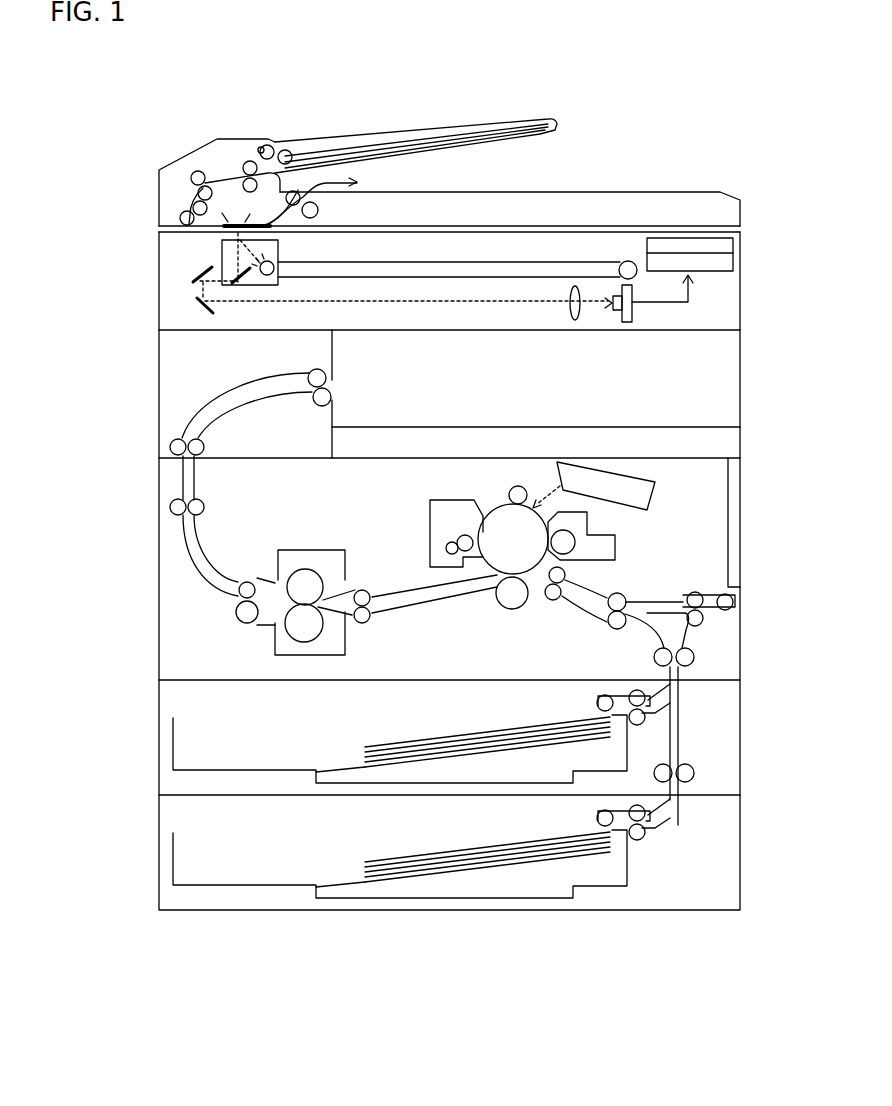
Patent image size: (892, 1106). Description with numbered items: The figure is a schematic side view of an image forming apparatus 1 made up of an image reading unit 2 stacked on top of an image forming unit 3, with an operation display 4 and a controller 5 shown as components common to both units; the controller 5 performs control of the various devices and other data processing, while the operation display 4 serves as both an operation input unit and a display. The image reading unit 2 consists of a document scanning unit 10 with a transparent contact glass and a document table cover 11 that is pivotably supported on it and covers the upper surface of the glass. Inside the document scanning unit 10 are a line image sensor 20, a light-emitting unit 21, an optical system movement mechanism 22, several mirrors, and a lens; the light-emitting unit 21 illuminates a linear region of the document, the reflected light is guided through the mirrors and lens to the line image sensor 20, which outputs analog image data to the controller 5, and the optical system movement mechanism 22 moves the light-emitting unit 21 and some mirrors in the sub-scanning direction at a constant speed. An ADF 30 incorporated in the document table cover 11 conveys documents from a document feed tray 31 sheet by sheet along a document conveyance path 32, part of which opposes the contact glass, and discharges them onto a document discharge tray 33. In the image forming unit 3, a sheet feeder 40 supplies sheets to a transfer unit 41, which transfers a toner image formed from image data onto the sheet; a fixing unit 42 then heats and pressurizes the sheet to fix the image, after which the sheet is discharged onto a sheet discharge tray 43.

The image forming apparatus 1 is at (672, 133).
The image reading unit 2 is at (82, 217).
The image forming unit 3 is at (150, 566).
The operation display 4 is at (738, 245).
The controller 5 is at (738, 262).
The document scanning unit 10 is at (158, 258).
The document table cover 11 is at (158, 210).
The line image sensor 20 is at (627, 323).
The light-emitting unit 21 is at (275, 263).
The optical system movement mechanism 22 is at (628, 260).
The ADF 30 is at (158, 185).
The document feed tray 31 is at (380, 135).
The document conveyance path 32 is at (218, 182).
The document discharge tray 33 is at (485, 192).
The sheet feeder 40 is at (695, 715).
The transfer unit 41 is at (482, 605).
The fixing unit 42 is at (297, 540).
The sheet discharge tray 43 is at (490, 427).